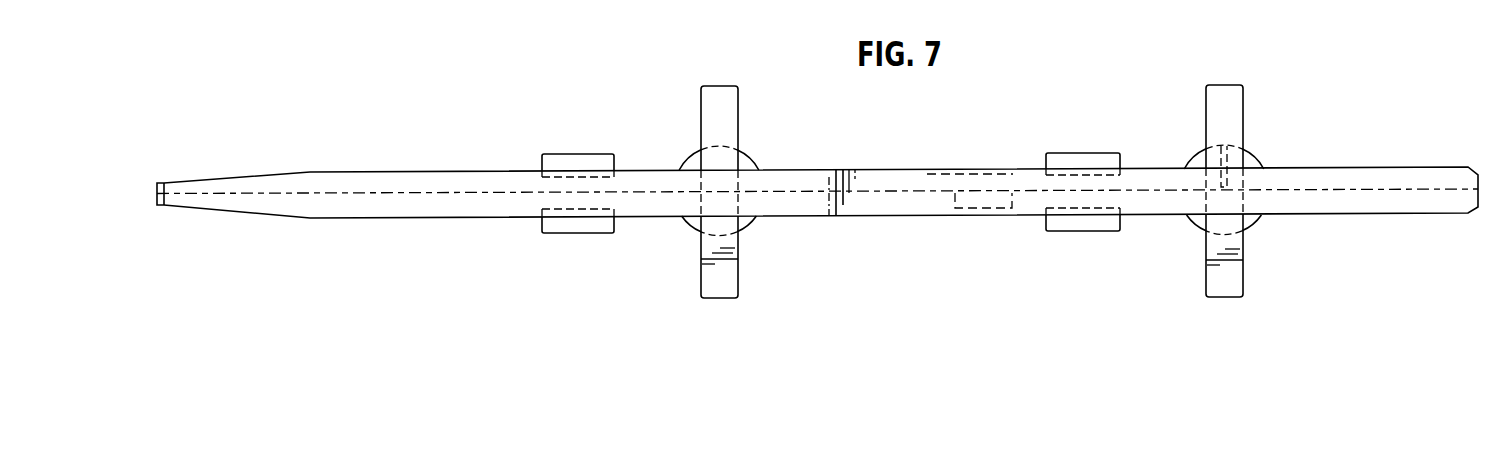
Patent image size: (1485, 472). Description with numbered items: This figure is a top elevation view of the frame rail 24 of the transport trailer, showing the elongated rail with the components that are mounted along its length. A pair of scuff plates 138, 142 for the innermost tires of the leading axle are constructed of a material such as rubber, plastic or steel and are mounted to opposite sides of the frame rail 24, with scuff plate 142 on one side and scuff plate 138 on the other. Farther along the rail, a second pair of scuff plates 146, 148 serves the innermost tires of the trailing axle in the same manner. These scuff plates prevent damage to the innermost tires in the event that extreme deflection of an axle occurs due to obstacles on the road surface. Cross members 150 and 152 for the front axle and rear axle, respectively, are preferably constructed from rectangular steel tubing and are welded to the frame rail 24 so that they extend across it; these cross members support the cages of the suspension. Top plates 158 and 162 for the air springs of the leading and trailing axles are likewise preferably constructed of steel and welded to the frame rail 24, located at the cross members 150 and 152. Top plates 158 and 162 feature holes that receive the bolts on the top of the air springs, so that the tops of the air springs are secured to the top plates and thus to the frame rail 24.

The frame rail 24 is at (836, 169).
The scuff plate 138 is at (577, 233).
The scuff plate 142 is at (562, 158).
The scuff plate 146 is at (1082, 231).
The scuff plate 148 is at (1070, 153).
The cross member 150 is at (738, 123).
The cross member 152 is at (1207, 121).
The top plate 158 is at (688, 160).
The top plate 162 is at (1257, 157).